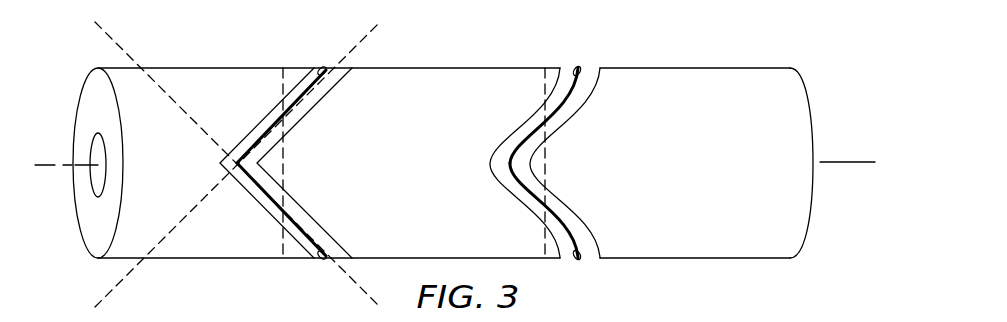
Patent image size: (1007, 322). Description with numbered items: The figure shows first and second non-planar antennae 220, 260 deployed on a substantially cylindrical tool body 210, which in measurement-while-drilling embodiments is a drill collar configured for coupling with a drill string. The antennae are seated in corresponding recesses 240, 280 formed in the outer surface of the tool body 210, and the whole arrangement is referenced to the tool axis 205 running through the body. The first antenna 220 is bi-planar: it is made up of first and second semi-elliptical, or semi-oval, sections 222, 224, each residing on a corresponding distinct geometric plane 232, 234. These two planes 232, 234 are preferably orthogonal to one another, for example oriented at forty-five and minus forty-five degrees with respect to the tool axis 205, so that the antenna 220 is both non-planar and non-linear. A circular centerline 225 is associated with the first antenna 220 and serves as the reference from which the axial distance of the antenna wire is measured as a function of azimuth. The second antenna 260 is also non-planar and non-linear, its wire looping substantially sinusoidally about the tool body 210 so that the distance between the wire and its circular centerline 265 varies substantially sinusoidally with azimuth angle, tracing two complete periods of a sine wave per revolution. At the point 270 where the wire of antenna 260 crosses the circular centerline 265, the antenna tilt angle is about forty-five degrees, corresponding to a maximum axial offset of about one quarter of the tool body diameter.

The tool axis 205 is at (45, 165).
The tool body 210 is at (180, 68).
The first non-planar antenna 220 is at (298, 167).
The first semi-elliptical section 222 is at (310, 93).
The second semi-elliptical section 224 is at (306, 230).
The circular centerline 225 is at (283, 153).
The first geometric plane 232 is at (187, 215).
The second geometric plane 234 is at (187, 113).
The recess 240 is at (260, 210).
The second non-planar antenna 260 is at (581, 232).
The circular centerline 265 is at (545, 153).
The crossing point 270 is at (569, 142).
The recess 280 is at (586, 104).